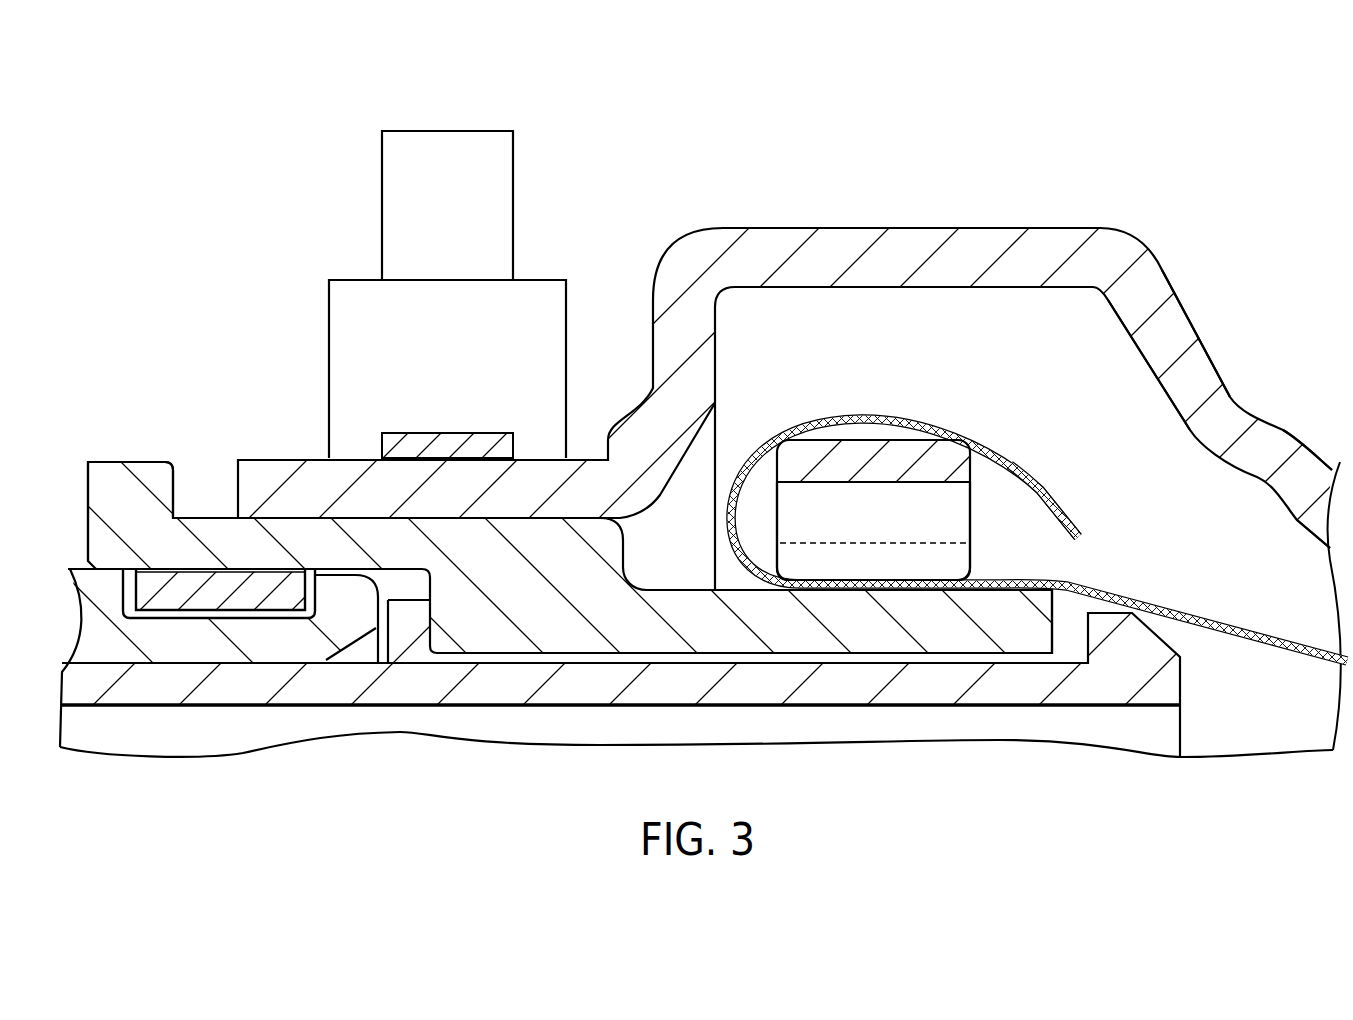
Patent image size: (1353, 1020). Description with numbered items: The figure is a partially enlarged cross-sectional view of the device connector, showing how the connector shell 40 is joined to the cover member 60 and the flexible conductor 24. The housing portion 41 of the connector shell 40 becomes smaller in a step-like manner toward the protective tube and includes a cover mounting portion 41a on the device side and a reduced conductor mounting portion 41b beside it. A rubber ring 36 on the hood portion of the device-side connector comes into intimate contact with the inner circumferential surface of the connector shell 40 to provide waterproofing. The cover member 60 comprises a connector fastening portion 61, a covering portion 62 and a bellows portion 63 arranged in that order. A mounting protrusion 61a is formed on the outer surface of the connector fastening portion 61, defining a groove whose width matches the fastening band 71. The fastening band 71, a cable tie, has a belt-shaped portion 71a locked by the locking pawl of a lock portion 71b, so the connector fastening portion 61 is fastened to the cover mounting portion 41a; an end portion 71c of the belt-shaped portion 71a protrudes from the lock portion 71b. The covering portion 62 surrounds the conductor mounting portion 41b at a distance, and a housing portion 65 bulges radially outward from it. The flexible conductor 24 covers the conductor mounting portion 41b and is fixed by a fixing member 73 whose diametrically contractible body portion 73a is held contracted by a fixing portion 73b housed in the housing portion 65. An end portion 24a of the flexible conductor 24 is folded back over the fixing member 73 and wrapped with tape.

The connector shell 40 is at (103, 460).
The housing portion 41 is at (130, 511).
The cover mounting portion 41a is at (208, 518).
The conductor mounting portion 41b is at (881, 642).
The rubber ring 36 is at (215, 593).
The connector fastening portion 61 is at (250, 460).
The mounting protrusion 61a is at (292, 460).
The fastening band 71 is at (470, 510).
The belt-shaped portion 71a is at (480, 432).
The lock portion 71b is at (538, 290).
The end portion 71c is at (448, 131).
The housing portion 65 is at (930, 228).
The cover member 60 is at (1162, 262).
The covering portion 62 is at (1283, 430).
The bellows portion 63 is at (1318, 467).
The fixing member 73 is at (972, 510).
The body portion 73a is at (958, 563).
The fixing portion 73b is at (972, 467).
The flexible conductor 24 is at (1153, 601).
The end portion 24a is at (1057, 493).